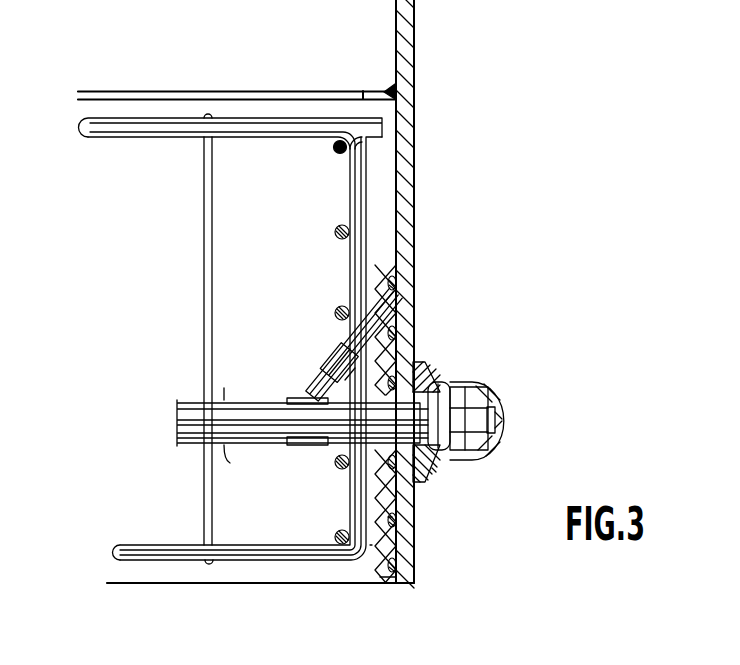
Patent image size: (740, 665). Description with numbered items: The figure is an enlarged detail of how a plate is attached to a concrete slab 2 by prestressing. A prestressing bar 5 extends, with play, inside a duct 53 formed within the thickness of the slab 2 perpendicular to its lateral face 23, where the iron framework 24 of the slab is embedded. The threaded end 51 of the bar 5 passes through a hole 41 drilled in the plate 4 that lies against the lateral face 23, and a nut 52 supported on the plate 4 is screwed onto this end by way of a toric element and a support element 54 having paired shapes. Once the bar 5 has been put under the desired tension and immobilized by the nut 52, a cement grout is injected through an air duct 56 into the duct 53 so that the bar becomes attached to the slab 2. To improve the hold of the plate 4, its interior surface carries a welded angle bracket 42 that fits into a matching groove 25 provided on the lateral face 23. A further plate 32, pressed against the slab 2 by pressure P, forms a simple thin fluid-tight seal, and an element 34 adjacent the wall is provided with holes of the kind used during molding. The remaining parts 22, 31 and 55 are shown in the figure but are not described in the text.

The slab 2 is at (165, 567).
The top plate 22 is at (298, 92).
The lateral face 23 is at (387, 552).
The iron framework 24 is at (360, 176).
The groove 25 is at (390, 517).
The wall 31 is at (403, 56).
The plate 32 is at (363, 91).
The element 34 is at (390, 89).
The plate 4 is at (426, 427).
The hole 41 is at (428, 372).
The welded angle bracket 42 is at (400, 553).
The bar 5 is at (263, 445).
The end of bar 51 is at (478, 412).
The nut 52 is at (460, 394).
The duct 53 is at (266, 400).
The support element 54 is at (432, 470).
The washer 55 is at (437, 460).
The air duct 56 is at (350, 347).